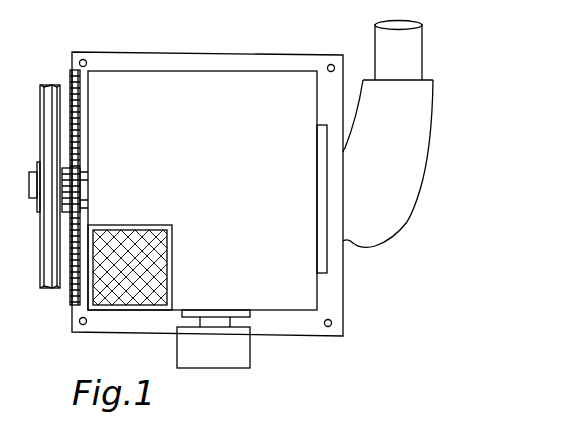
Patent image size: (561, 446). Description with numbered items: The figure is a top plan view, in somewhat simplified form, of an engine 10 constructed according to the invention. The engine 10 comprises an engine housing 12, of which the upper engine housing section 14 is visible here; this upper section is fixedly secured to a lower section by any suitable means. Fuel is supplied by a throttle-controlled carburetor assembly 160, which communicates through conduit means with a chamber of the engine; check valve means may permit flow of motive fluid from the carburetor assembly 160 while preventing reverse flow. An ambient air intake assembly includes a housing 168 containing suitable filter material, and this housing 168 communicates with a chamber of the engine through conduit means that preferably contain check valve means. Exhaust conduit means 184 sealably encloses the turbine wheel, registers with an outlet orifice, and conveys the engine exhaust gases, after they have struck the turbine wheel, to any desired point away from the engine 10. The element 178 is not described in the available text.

The engine 10 is at (432, 172).
The engine housing 12 is at (198, 68).
The upper engine housing section 14 is at (122, 62).
The carburetor assembly 160 is at (250, 350).
The housing 168 is at (116, 310).
The filter screen 178 is at (147, 236).
The exhaust conduit means 184 is at (408, 222).